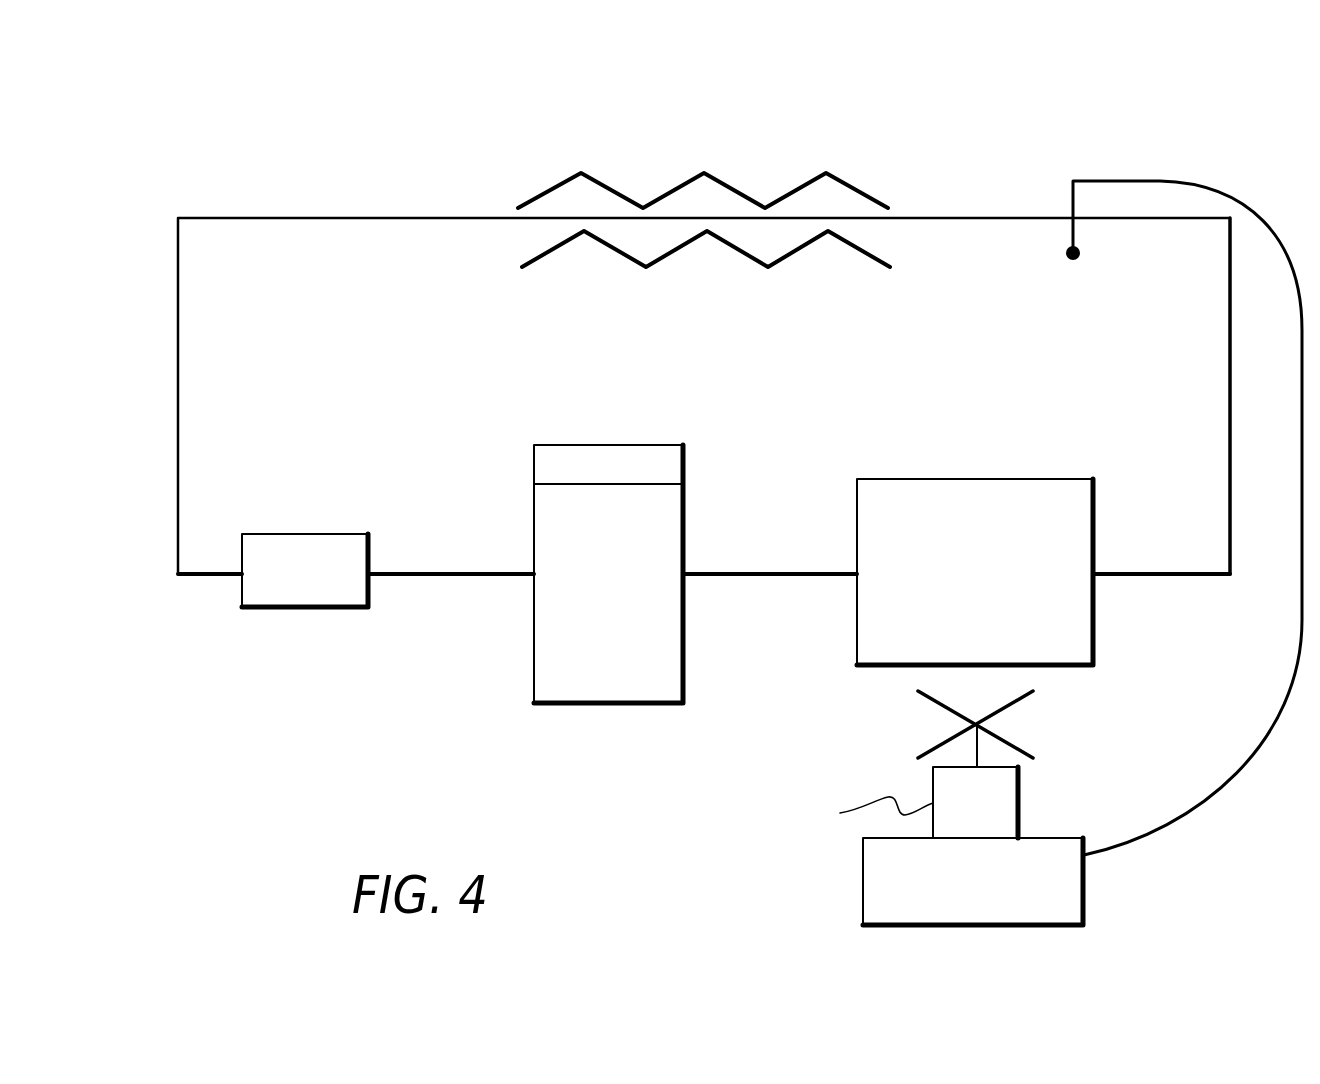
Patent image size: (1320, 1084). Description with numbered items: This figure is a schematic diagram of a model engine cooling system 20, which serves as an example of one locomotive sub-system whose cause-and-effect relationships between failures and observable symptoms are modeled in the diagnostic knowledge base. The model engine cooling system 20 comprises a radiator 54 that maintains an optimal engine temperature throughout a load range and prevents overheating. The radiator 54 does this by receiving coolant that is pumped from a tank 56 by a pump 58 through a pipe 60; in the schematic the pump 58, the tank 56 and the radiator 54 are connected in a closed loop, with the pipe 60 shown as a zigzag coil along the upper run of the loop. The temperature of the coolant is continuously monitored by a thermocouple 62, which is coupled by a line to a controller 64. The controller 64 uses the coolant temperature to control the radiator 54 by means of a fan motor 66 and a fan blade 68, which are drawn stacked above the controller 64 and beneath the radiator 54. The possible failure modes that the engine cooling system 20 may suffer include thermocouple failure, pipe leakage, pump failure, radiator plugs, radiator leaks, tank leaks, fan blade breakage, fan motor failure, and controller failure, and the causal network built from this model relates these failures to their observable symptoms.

The model engine cooling system 20 is at (358, 176).
The radiator 54 is at (1093, 600).
The tank 56 is at (532, 680).
The pump 58 is at (241, 593).
The pipe 60 is at (727, 184).
The thermocouple 62 is at (1070, 202).
The controller 64 is at (1083, 879).
The fan motor 66 is at (1018, 798).
The fan blade 68 is at (1020, 748).